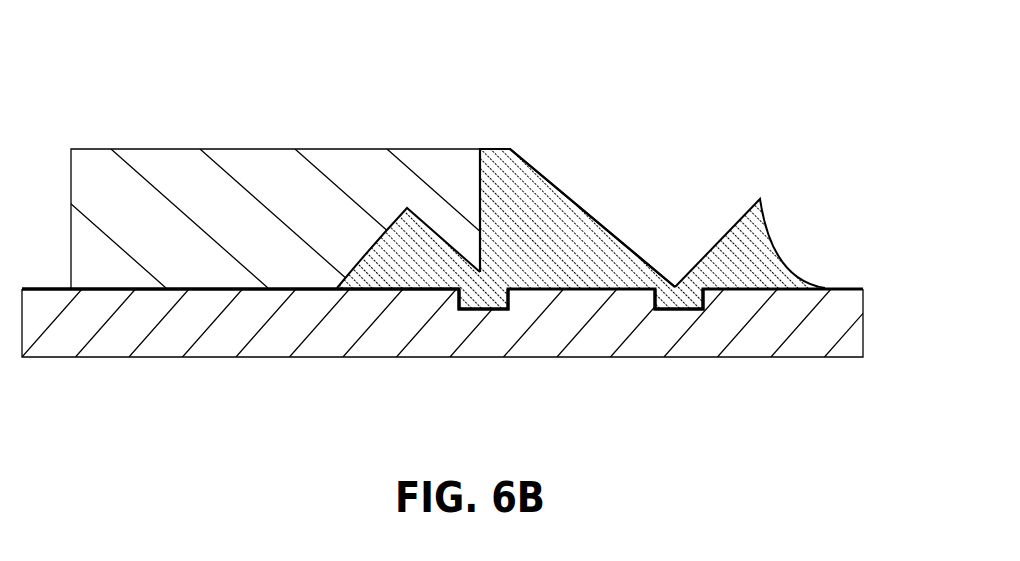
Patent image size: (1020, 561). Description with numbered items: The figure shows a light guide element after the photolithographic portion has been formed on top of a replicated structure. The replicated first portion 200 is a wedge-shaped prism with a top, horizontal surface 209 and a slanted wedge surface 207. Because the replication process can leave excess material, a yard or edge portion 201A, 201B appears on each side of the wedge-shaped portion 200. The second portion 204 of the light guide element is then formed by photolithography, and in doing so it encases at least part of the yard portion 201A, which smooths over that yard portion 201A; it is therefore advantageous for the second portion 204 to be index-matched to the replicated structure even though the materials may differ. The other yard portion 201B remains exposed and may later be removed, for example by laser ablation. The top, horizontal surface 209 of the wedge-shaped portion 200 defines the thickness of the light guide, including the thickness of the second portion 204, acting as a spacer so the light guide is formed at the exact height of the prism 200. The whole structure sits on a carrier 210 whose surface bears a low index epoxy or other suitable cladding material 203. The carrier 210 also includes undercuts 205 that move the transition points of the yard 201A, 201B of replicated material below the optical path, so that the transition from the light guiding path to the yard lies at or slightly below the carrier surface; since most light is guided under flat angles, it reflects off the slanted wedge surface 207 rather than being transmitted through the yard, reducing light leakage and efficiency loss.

The replicated first portion 200 is at (605, 158).
The yard portion 201A is at (398, 200).
The yard portion 201B is at (783, 212).
The cladding material 203 is at (182, 286).
The second portion 204 is at (201, 175).
The undercuts 205 is at (665, 304).
The slanted wedge surface 207 is at (608, 226).
The top horizontal surface 209 is at (518, 145).
The carrier 210 is at (853, 328).